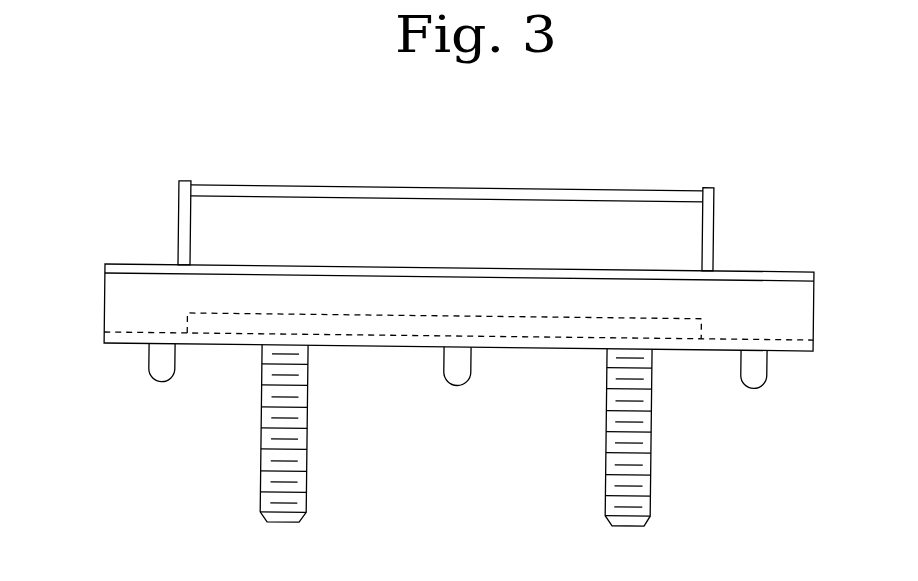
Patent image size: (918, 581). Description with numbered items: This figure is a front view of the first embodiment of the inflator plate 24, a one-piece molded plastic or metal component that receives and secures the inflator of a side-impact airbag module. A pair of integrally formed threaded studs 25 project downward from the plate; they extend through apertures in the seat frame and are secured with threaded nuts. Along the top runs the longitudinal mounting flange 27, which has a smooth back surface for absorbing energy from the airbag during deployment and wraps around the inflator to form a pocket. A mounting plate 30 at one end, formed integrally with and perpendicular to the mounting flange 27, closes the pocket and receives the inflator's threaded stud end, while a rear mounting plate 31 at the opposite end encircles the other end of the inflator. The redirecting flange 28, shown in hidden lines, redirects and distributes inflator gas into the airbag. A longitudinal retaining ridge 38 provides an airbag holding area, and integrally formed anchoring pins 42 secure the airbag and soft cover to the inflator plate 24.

The inflator plate 24 is at (816, 332).
The threaded studs 25 is at (608, 440).
The longitudinal mounting flange 27 is at (595, 220).
The redirecting flange 28 is at (246, 345).
The mounting plate 30 is at (176, 228).
The rear mounting plate 31 is at (714, 228).
The longitudinal retaining ridge 38 is at (118, 306).
The anchoring pins 42 is at (162, 383).